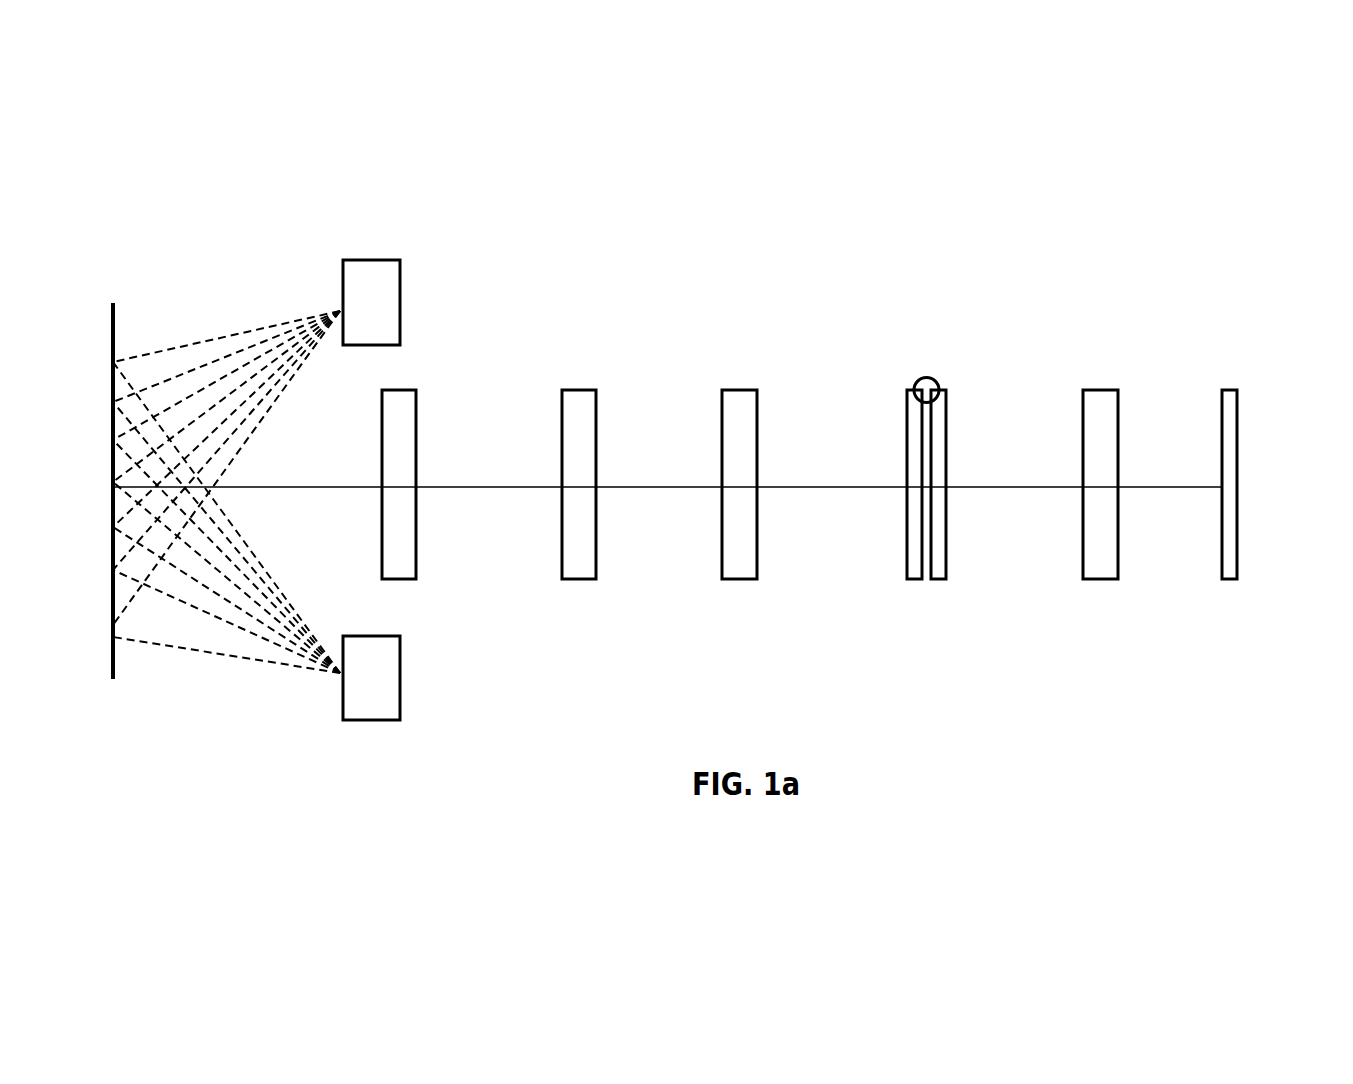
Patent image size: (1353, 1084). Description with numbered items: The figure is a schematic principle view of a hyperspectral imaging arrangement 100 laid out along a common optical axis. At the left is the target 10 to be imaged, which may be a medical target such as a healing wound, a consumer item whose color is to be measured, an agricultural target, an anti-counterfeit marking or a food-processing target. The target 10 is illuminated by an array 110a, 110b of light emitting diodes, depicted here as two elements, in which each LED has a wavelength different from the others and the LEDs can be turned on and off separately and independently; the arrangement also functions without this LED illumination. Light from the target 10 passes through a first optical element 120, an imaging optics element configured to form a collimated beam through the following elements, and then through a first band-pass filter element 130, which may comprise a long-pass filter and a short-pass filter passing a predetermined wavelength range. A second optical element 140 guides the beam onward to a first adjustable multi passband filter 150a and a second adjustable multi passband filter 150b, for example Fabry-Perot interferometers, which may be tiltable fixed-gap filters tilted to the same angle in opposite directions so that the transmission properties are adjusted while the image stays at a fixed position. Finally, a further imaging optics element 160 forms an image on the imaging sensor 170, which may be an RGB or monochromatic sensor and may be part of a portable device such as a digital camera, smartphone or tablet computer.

The hyperspectral imaging arrangement 100 is at (765, 232).
The target 10 is at (119, 326).
The array of Light Emitting Diodes 110a is at (401, 304).
The array of Light Emitting Diodes 110b is at (401, 674).
The first optical element 120 is at (403, 390).
The first band-pass filter element 130 is at (583, 390).
The second optical element 140 is at (743, 390).
The first adjustable multi passband filter 150a is at (908, 417).
The second adjustable multi passband filter 150b is at (947, 417).
The second optical element 160 is at (1103, 390).
The imaging sensor 170 is at (1224, 390).